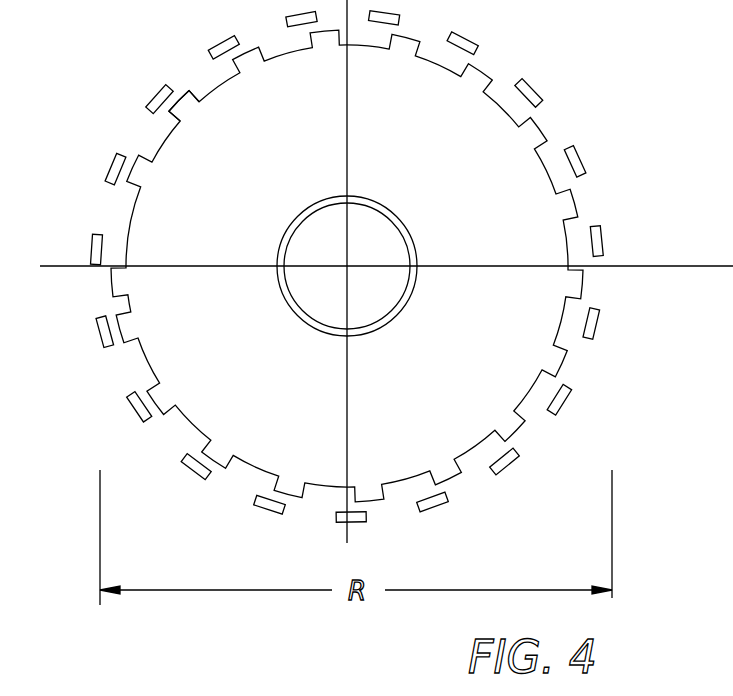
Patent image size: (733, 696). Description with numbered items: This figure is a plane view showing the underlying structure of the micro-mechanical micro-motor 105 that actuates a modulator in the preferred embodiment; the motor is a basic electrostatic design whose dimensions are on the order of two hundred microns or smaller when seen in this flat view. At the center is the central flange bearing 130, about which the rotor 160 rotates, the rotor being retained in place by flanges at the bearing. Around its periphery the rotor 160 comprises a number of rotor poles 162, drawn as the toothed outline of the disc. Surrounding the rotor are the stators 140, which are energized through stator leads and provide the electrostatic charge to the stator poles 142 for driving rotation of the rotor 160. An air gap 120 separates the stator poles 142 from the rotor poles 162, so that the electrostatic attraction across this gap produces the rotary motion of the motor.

The micro-motor 105 is at (570, 58).
The air gap 120 is at (222, 58).
The central flange bearing 130 is at (315, 245).
The stators 140 is at (585, 157).
The stator poles 142 is at (128, 403).
The rotor 160 is at (462, 376).
The rotor poles 162 is at (168, 114).